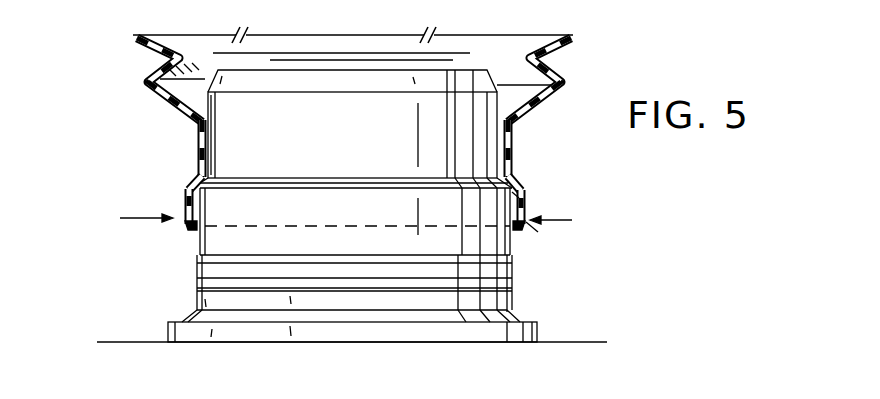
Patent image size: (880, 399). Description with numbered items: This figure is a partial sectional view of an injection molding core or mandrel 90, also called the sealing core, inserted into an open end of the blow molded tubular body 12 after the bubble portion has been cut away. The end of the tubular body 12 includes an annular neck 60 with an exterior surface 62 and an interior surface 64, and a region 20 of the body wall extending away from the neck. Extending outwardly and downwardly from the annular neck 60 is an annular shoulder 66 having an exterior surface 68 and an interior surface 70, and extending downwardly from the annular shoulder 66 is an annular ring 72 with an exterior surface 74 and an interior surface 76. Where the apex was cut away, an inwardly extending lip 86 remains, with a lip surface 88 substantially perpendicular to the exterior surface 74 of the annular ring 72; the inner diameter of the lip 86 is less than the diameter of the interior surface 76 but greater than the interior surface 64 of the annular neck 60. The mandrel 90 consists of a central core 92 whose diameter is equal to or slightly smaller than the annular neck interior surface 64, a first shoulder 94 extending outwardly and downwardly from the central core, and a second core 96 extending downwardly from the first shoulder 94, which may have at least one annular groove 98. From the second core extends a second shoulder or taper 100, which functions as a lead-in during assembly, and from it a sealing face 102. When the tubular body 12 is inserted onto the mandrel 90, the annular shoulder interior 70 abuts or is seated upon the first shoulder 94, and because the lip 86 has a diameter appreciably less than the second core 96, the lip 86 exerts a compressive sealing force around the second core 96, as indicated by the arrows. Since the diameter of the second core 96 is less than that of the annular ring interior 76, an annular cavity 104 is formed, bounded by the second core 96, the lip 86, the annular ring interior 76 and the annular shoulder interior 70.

The tubular body 12 is at (572, 74).
The container flange 20 is at (143, 78).
The annular neck 60 is at (514, 135).
The exterior surface 62 is at (197, 143).
The interior surface 64 is at (207, 133).
The annular shoulder 66 is at (524, 180).
The exterior surface 68 is at (190, 183).
The interior surface 70 is at (203, 187).
The annular ring 72 is at (533, 201).
The exterior surface 74 is at (183, 202).
The interior surface 76 is at (523, 198).
The inwardly extending lip 86 is at (190, 227).
The lip surface 88 is at (517, 233).
The mandrel 90 is at (306, 100).
The central core 92 is at (317, 149).
The first shoulder 94 is at (377, 185).
The second core 96 is at (317, 218).
The annular groove 98 is at (197, 283).
The second shoulder or taper 100 is at (517, 317).
The sealing face 102 is at (387, 335).
The annular cavity 104 is at (519, 226).